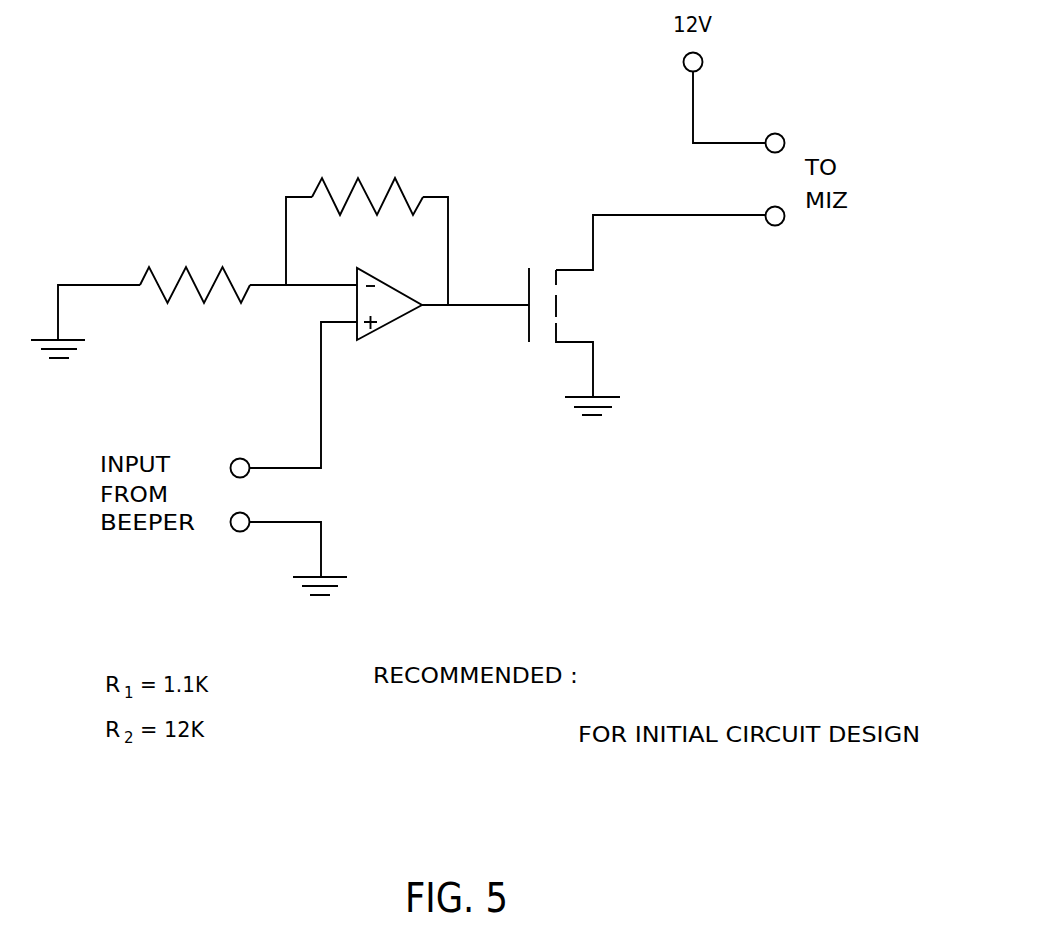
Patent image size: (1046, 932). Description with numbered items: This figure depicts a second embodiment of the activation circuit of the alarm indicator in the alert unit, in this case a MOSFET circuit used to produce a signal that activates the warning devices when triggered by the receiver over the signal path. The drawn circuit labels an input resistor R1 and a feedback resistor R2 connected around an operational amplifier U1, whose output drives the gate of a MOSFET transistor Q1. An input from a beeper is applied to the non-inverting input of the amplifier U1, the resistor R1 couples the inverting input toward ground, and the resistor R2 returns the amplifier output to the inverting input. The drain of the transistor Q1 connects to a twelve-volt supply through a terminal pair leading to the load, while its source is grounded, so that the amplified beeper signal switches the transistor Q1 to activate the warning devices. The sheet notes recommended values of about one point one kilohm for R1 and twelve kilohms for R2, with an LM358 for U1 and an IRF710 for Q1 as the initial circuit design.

The resistor R1 (1.1K) R1 is at (195, 255).
The feedback resistor R2 (12K) R2 is at (367, 173).
The operational amplifier U1 (LM358) U1 is at (536, 481).
The MOSFET transistor Q1 (IRF710) Q1 is at (631, 469).